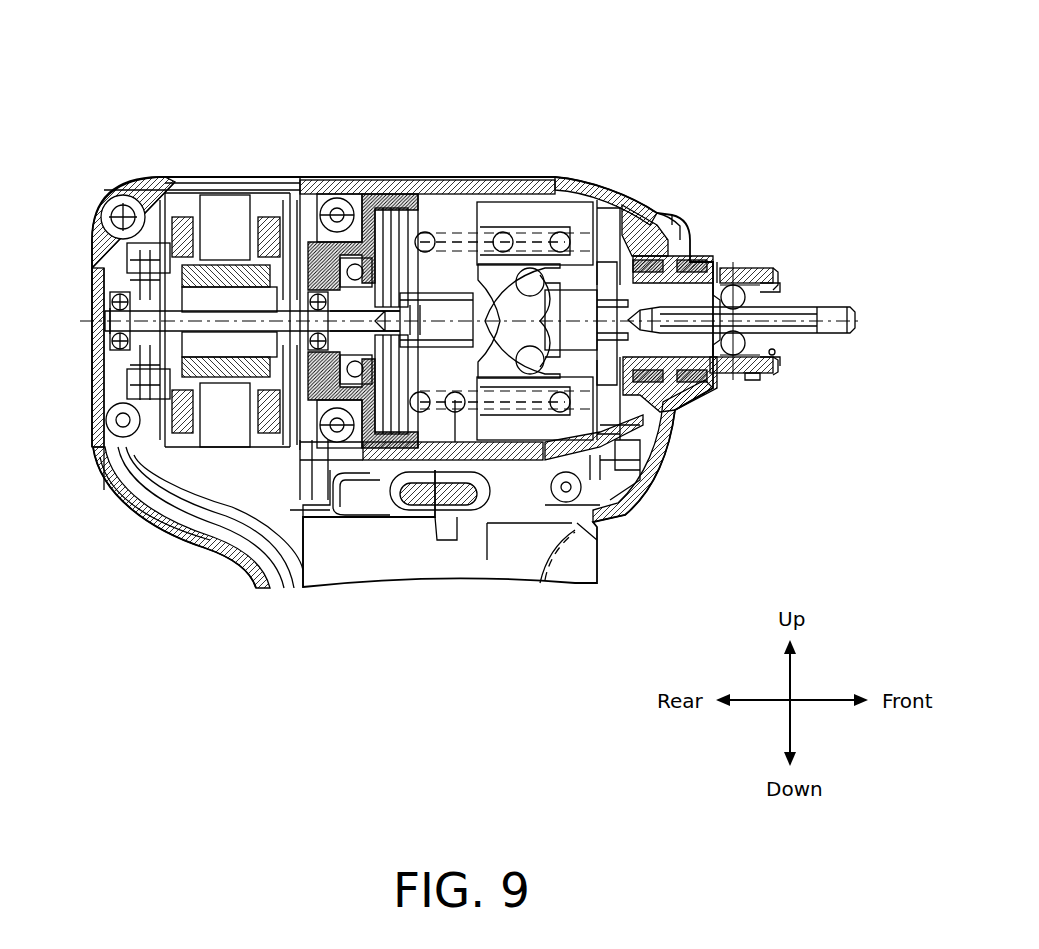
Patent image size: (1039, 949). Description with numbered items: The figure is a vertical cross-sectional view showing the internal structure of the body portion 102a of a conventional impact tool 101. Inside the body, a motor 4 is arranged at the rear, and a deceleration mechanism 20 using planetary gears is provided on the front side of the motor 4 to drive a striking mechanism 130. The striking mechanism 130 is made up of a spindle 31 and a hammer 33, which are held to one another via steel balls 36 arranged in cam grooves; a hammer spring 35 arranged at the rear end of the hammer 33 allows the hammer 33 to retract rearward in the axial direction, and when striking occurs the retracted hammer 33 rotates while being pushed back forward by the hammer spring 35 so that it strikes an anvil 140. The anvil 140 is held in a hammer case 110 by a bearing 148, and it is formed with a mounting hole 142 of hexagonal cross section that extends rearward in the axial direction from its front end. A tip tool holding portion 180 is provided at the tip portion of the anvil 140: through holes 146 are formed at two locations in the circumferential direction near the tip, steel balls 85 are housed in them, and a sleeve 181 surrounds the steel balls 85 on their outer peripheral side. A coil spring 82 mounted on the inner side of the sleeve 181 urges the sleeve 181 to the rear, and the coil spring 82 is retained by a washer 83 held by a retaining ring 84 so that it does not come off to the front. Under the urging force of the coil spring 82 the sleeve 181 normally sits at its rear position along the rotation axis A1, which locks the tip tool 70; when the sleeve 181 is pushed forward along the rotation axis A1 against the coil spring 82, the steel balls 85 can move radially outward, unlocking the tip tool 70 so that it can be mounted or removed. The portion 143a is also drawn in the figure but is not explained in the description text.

The impact tool 101 is at (93, 112).
The body portion 102a is at (143, 493).
The motor 4 is at (223, 208).
The rotation axis A1 is at (448, 321).
The deceleration mechanism 20 is at (380, 183).
The hammer 33 is at (550, 210).
The spindle 31 is at (450, 293).
The steel balls 36 is at (525, 278).
The hammer spring 35 is at (455, 400).
The striking mechanism 130 is at (580, 180).
The hammer case front portion 143a is at (615, 185).
The hammer case 110 is at (655, 183).
The bearing 148 is at (690, 262).
The through holes 146 is at (718, 293).
The steel balls 85 is at (738, 290).
The tip tool holding portion 180 is at (782, 260).
The sleeve 181 is at (775, 273).
The retaining ring 84 is at (775, 352).
The washer 83 is at (777, 363).
The tip tool 70 is at (850, 333).
The coil spring 82 is at (752, 373).
The mounting hole 142 is at (693, 348).
The anvil 140 is at (635, 350).